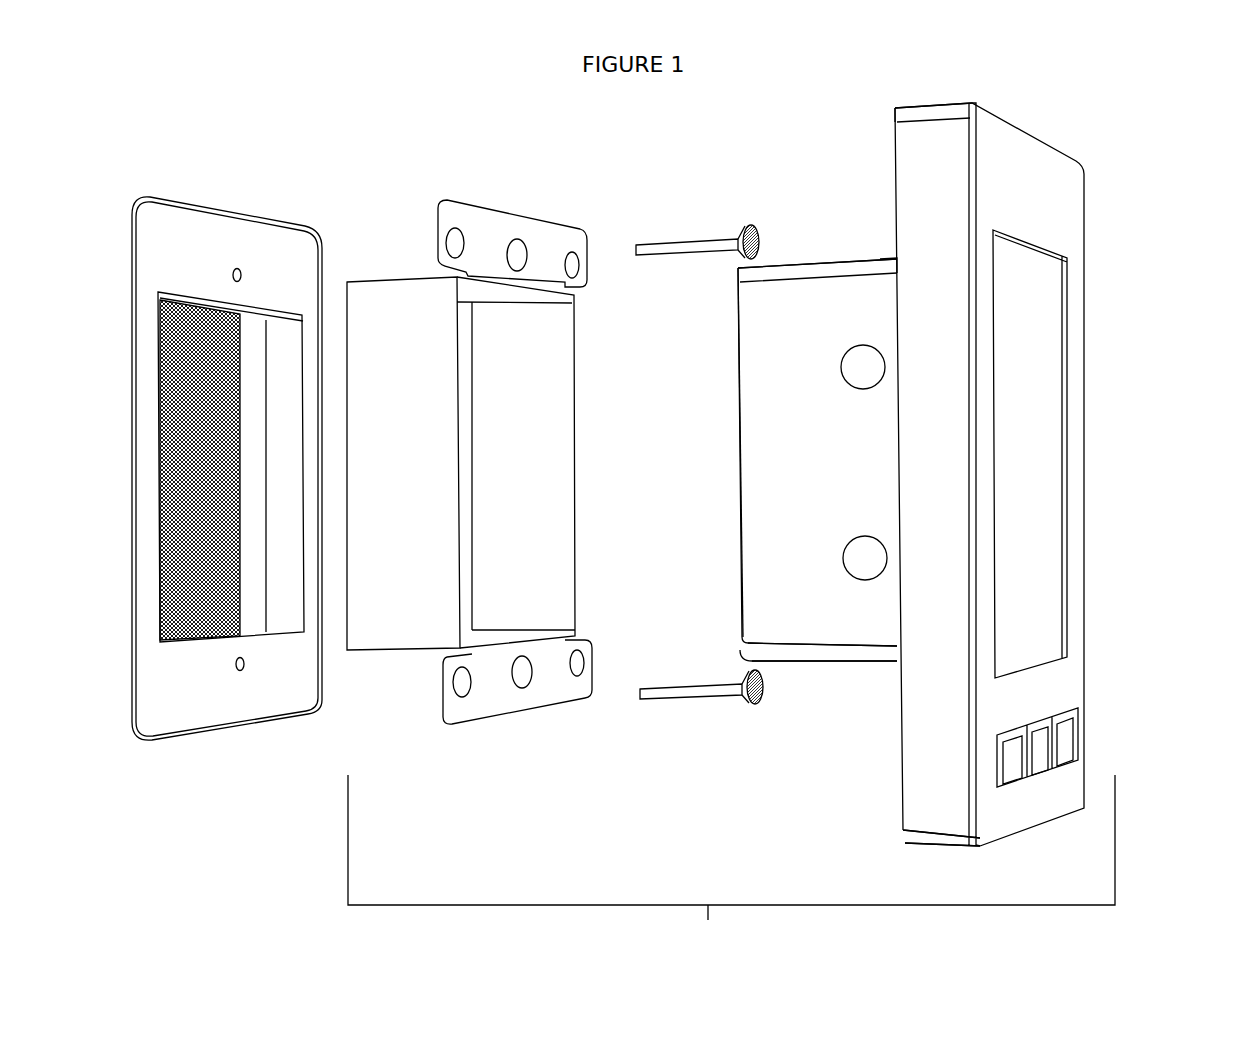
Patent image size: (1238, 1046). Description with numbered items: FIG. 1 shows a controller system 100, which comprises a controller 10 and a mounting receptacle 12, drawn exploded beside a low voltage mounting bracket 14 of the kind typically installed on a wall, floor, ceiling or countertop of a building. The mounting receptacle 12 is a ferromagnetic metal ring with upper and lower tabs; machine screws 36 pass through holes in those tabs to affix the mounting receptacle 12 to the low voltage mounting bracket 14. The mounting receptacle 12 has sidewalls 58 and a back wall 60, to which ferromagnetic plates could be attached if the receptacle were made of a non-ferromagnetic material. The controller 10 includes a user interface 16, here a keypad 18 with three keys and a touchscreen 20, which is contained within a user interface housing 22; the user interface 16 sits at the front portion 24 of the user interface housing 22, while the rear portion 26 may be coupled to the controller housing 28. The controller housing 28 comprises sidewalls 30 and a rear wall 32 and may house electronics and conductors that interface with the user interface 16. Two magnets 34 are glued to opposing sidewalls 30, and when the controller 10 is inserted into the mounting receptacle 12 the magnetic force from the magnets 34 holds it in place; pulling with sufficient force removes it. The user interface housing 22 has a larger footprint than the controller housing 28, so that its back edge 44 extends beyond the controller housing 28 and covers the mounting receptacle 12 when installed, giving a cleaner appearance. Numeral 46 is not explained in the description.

The controller 10 is at (1016, 475).
The mounting receptacle 12 is at (469, 492).
The low voltage mounting bracket 14 is at (227, 468).
The user interface 16 is at (1084, 508).
The keypad 18 is at (1070, 738).
The touchscreen 20 is at (1030, 454).
The user interface housing 22 is at (937, 474).
The front portion 24 is at (976, 102).
The rear portion 26 is at (894, 107).
The controller housing 28 is at (796, 460).
The sidewalls 30 is at (878, 255).
The rear wall 32 is at (736, 452).
The magnets 34 is at (864, 462).
The machine screws 36 is at (660, 238).
The back edge 44 is at (904, 842).
The top flange 46 is at (900, 251).
The sidewalls 58 is at (496, 462).
The back wall 60 is at (468, 374).
The controller system 100 is at (731, 865).